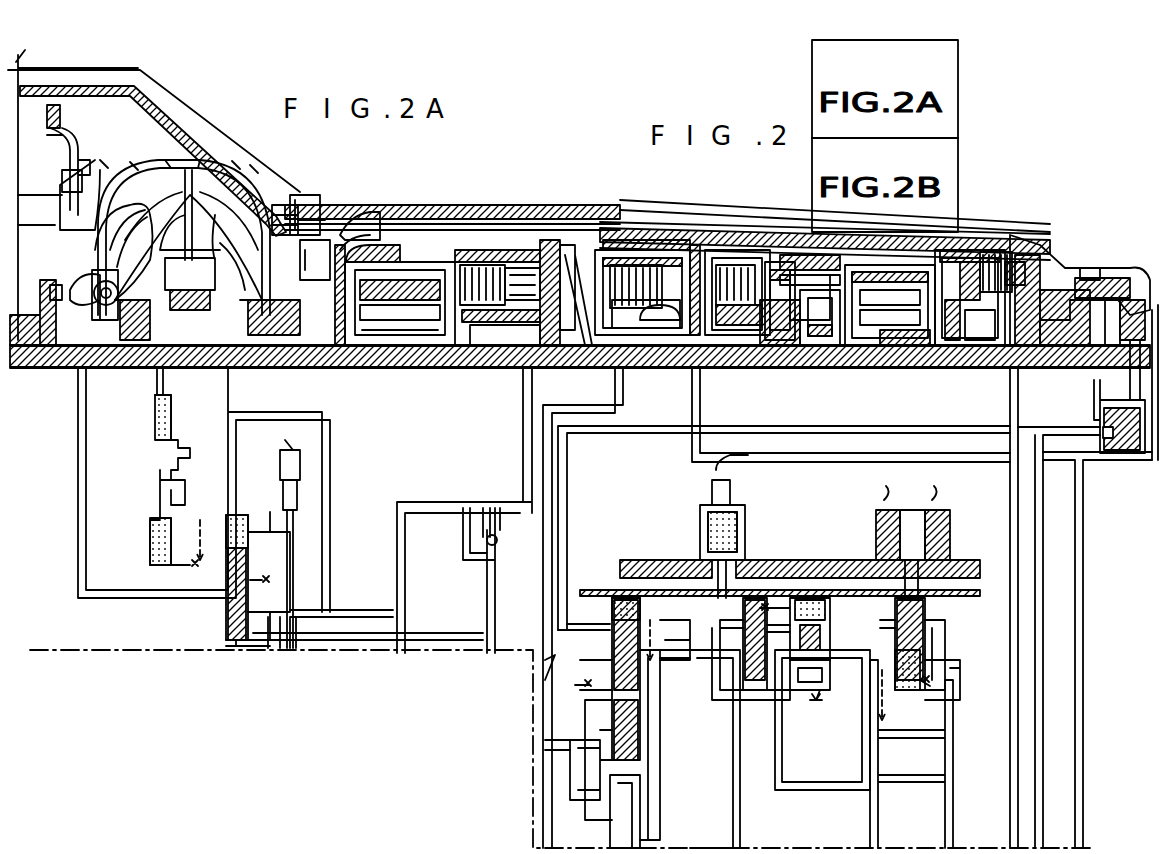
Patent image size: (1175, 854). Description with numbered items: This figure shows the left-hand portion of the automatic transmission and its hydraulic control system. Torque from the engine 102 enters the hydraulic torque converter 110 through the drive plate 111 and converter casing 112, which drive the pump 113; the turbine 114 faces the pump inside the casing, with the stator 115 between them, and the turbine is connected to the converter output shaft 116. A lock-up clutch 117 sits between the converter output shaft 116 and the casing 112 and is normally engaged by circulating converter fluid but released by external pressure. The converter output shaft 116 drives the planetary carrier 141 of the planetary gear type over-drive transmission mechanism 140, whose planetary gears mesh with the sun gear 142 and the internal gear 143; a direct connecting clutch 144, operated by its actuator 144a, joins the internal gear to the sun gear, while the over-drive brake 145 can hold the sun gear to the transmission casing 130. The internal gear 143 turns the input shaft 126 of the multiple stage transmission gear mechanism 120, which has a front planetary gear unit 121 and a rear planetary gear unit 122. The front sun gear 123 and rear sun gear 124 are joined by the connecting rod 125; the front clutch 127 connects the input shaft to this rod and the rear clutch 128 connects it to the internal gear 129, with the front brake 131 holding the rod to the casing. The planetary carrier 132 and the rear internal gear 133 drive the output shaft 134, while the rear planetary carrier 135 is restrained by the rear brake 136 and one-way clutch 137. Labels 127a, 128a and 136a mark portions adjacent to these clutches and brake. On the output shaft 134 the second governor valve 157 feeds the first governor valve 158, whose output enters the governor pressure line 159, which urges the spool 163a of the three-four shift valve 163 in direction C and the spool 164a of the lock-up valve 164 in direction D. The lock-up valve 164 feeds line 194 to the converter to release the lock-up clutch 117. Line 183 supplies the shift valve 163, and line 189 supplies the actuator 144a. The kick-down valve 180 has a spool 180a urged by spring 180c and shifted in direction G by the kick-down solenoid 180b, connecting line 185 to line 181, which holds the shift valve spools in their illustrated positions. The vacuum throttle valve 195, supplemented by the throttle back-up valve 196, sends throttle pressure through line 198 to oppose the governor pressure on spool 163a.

The engine 102 is at (22, 66).
The hydraulic torque converter 110 is at (200, 150).
The drive plate 111 is at (76, 150).
The converter casing 112 is at (185, 220).
The pump 113 is at (235, 200).
The turbine 114 is at (135, 205).
The stator 115 is at (281, 270).
The converter output shaft 116 is at (122, 368).
The lock-up clutch 117 is at (68, 195).
The multiple stage transmission gear mechanism 120 is at (808, 236).
The front planetary gear unit 121 is at (775, 262).
The rear planetary gear unit 122 is at (968, 262).
The sun gear 123 is at (820, 368).
The sun gear 124 is at (910, 368).
The connecting rod 125 is at (870, 368).
The input shaft 126 is at (666, 368).
The front clutch 127 is at (612, 258).
The forward clutch hydraulic chamber 127a is at (606, 368).
The rear clutch 128 is at (728, 258).
The direct clutch hydraulic chamber 128a is at (706, 370).
The internal gear 129 is at (805, 258).
The transmission casing 130 is at (630, 245).
The front brake 131 is at (694, 248).
The planetary carrier 132 is at (772, 368).
The internal gear 133 is at (1000, 255).
The output shaft 134 is at (945, 368).
The planetary carrier 135 is at (948, 250).
The rear brake 136 is at (1060, 260).
The output member flange 136a is at (1088, 268).
The one-way clutch 137 is at (1020, 368).
The planetary gear type over-drive transmission mechanism 140 is at (368, 240).
The planetary carrier 141 is at (430, 345).
The sun gear 142 is at (356, 365).
The internal gear 143 is at (400, 240).
The direct connecting clutch 144 is at (500, 265).
The actuator 144a is at (548, 258).
The over-drive brake 145 is at (470, 250).
The second governor valve 157 is at (1135, 300).
The first governor valve 158 is at (1125, 412).
The governor pressure line 159 is at (1032, 427).
The 3-4 shift valve 163 is at (600, 578).
The spool 163a is at (600, 660).
The lock-up valve 164 is at (205, 605).
The spool 164a is at (224, 633).
The kick-down valve 180 is at (946, 586).
The spool 180a is at (928, 612).
The kick-down solenoid 180b is at (878, 525).
The spring 180c is at (932, 692).
The line 181 is at (868, 745).
The line 183 is at (640, 770).
The line 185 is at (938, 800).
The line 189 is at (487, 605).
The line 194 is at (86, 505).
The vacuum throttle valve 195 is at (740, 594).
The throttle back-up valve 196 is at (812, 702).
The line 198 is at (665, 716).